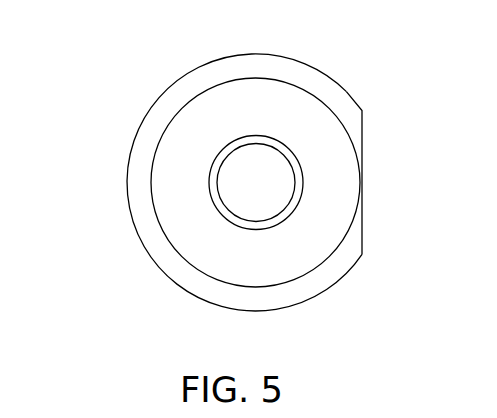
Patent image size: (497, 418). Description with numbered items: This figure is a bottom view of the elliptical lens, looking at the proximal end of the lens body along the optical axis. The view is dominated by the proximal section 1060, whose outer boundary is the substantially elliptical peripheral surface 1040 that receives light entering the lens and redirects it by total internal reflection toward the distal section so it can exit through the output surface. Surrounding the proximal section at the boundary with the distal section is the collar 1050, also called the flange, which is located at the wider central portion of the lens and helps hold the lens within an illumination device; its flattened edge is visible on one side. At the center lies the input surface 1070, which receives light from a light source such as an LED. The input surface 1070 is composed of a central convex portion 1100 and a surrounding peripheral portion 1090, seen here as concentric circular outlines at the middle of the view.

The elliptical peripheral surface 1040 is at (170, 210).
The collar 1050 is at (138, 160).
The proximal section 1060 is at (316, 123).
The input surface 1070 is at (255, 138).
The peripheral portion 1090 is at (298, 170).
The convex portion 1100 is at (245, 207).